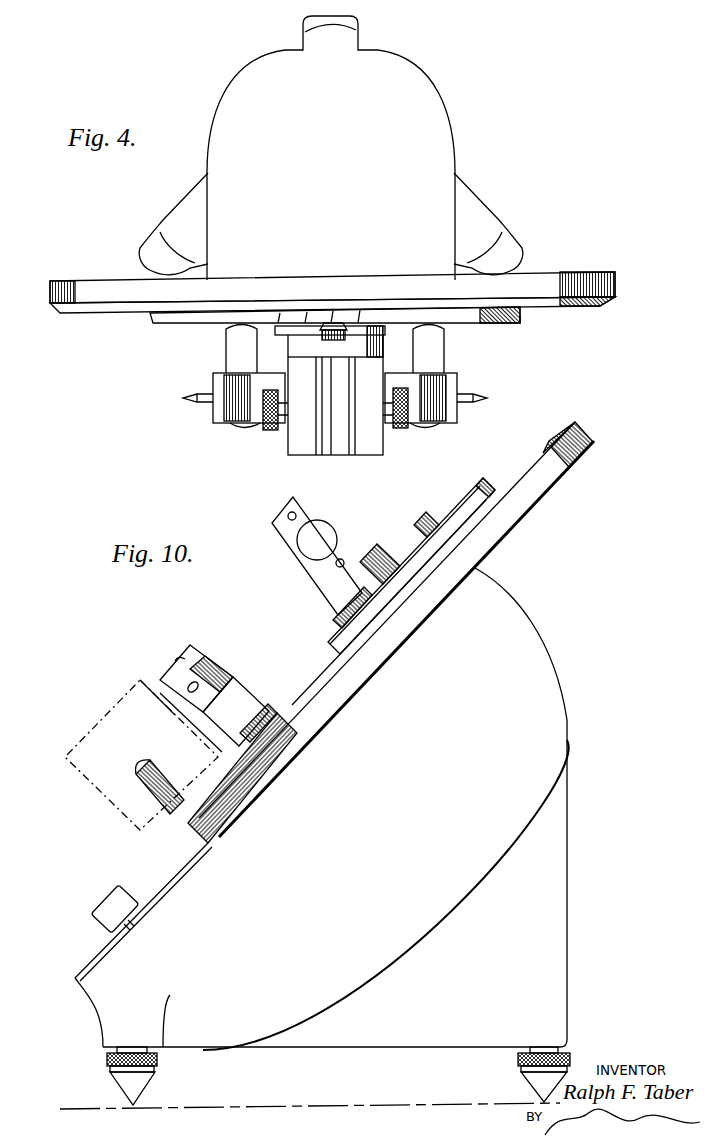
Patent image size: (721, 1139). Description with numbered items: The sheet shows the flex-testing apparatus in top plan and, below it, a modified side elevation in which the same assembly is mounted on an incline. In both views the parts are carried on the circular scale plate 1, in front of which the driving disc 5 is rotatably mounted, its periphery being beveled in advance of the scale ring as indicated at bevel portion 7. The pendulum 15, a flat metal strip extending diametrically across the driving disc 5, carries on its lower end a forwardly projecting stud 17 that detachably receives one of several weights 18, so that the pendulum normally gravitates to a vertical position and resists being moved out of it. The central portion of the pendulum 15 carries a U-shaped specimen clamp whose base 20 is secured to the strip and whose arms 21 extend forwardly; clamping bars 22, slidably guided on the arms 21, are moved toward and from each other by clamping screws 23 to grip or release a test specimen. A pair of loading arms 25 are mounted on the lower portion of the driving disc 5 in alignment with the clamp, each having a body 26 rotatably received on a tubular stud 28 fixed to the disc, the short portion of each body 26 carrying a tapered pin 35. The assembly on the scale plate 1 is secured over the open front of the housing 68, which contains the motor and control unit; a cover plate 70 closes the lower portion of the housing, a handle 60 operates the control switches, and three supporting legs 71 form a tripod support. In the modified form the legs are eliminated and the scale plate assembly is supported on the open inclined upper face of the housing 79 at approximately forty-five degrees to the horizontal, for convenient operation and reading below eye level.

In FIG. 4, the scale plate 1 is at (560, 272).
In FIG. 10, the scale plate 1 is at (515, 522).
In FIG. 4, the driving disc 5 is at (482, 322).
In FIG. 10, the driving disc 5 is at (389, 602).
In FIG. 4, the bevel portion 7 is at (520, 318).
In FIG. 10, the bevel portion 7 is at (492, 482).
In FIG. 4, the pendulum 15 is at (295, 330).
In FIG. 10, the pendulum 15 is at (325, 650).
In FIG. 10, the stud 17 is at (172, 782).
In FIG. 10, the weight 18 is at (100, 712).
In FIG. 4, the base 20 is at (370, 340).
In FIG. 10, the base 20 is at (385, 560).
In FIG. 4, the arm 21 is at (300, 455).
In FIG. 10, the arm 21 is at (278, 525).
In FIG. 4, the clamping bar 22 is at (336, 388).
In FIG. 4, the clamping screw 23 is at (270, 427).
In FIG. 10, the clamping screw 23 is at (322, 533).
In FIG. 4, the loading arm 25 is at (220, 373).
In FIG. 10, the loading arm 25 is at (225, 663).
In FIG. 4, the body 26 is at (230, 423).
In FIG. 10, the body 26 is at (182, 674).
In FIG. 4, the tubular stud 28 is at (236, 338).
In FIG. 10, the tubular stud 28 is at (238, 700).
In FIG. 4, the pin 35 is at (193, 400).
In FIG. 10, the pin 35 is at (185, 698).
In FIG. 10, the handle 60 is at (110, 905).
In FIG. 4, the housing 68 is at (432, 138).
In FIG. 10, the cover plate 70 is at (175, 880).
In FIG. 4, the supporting leg 71 is at (153, 243).
In FIG. 10, the housing 79 is at (520, 598).